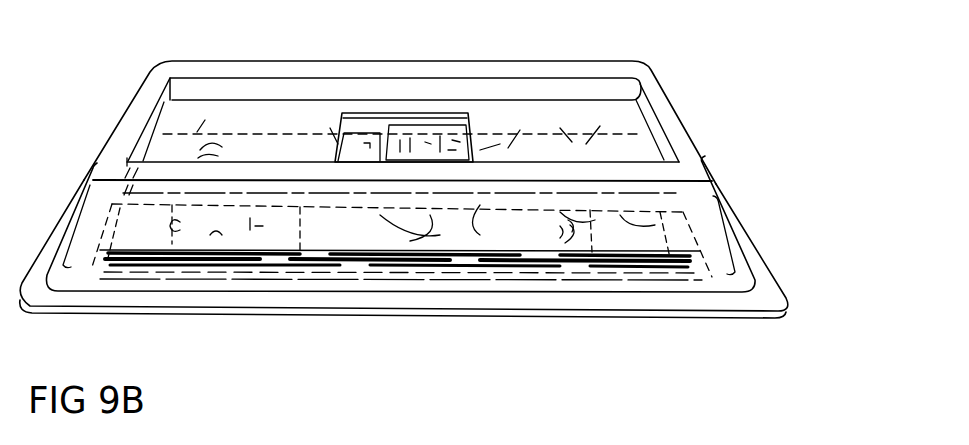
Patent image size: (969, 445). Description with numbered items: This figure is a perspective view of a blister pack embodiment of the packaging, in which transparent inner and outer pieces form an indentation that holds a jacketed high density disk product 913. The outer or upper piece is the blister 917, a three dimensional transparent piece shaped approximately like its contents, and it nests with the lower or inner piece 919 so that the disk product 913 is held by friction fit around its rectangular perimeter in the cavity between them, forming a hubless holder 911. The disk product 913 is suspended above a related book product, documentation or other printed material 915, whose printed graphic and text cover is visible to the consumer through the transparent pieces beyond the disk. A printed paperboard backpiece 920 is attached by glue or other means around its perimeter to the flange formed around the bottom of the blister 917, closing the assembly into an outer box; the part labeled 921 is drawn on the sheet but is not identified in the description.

The seal line between cover and tray 911 is at (342, 187).
The accessory compartment 913 is at (400, 130).
The packaged product 915 is at (498, 237).
The cover 917 is at (241, 67).
The tray side wall 919 is at (693, 230).
The base flange 920 is at (143, 315).
The tray rim 921 is at (733, 285).